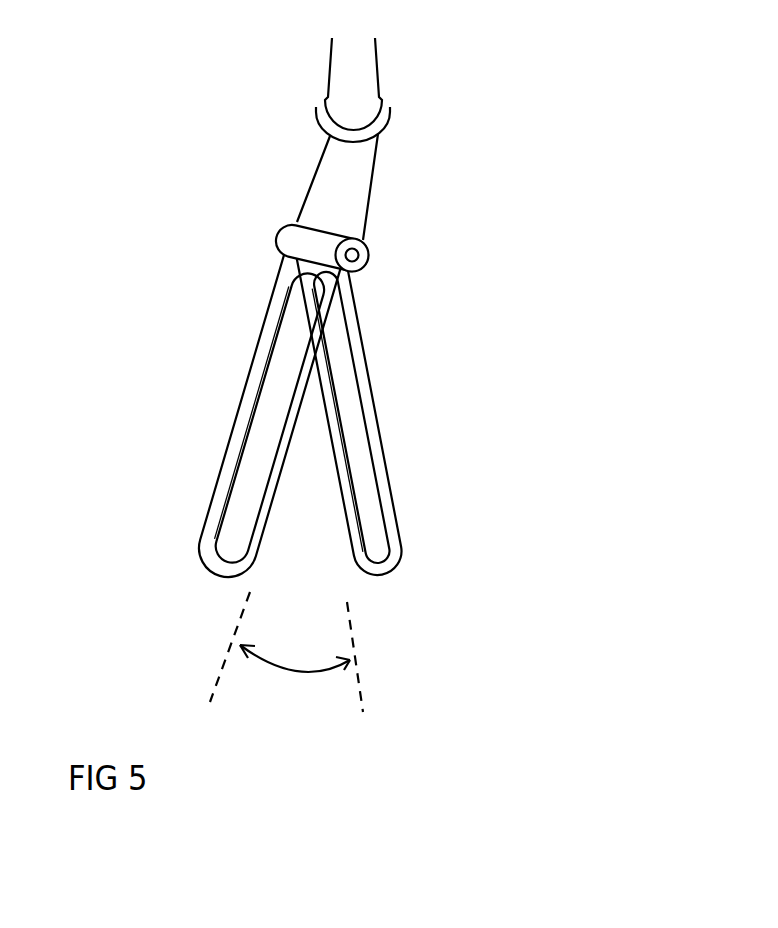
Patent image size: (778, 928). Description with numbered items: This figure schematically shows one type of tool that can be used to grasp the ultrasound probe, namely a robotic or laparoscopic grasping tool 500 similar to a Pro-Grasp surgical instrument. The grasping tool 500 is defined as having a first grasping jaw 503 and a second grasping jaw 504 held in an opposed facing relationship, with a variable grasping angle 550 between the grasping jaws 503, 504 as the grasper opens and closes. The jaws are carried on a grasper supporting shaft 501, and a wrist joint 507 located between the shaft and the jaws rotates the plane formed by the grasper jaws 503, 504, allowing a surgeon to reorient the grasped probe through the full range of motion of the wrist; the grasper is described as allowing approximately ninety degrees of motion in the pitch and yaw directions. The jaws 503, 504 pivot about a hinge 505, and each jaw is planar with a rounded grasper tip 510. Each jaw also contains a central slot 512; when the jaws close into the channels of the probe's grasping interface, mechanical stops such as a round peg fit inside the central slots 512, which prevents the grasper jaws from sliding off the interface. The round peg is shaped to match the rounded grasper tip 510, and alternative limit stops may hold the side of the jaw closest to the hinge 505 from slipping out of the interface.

The grasping tool 500 is at (193, 148).
The grasper supporting shaft 501 is at (377, 62).
The wrist joint 507 is at (390, 118).
The hinge 505 is at (369, 253).
The first grasping jaw 503 is at (218, 473).
The second grasping jaw 504 is at (393, 495).
The rounded grasper tip 510 is at (382, 573).
The central slot 512 is at (238, 510).
The grasping angle 550 is at (286, 652).